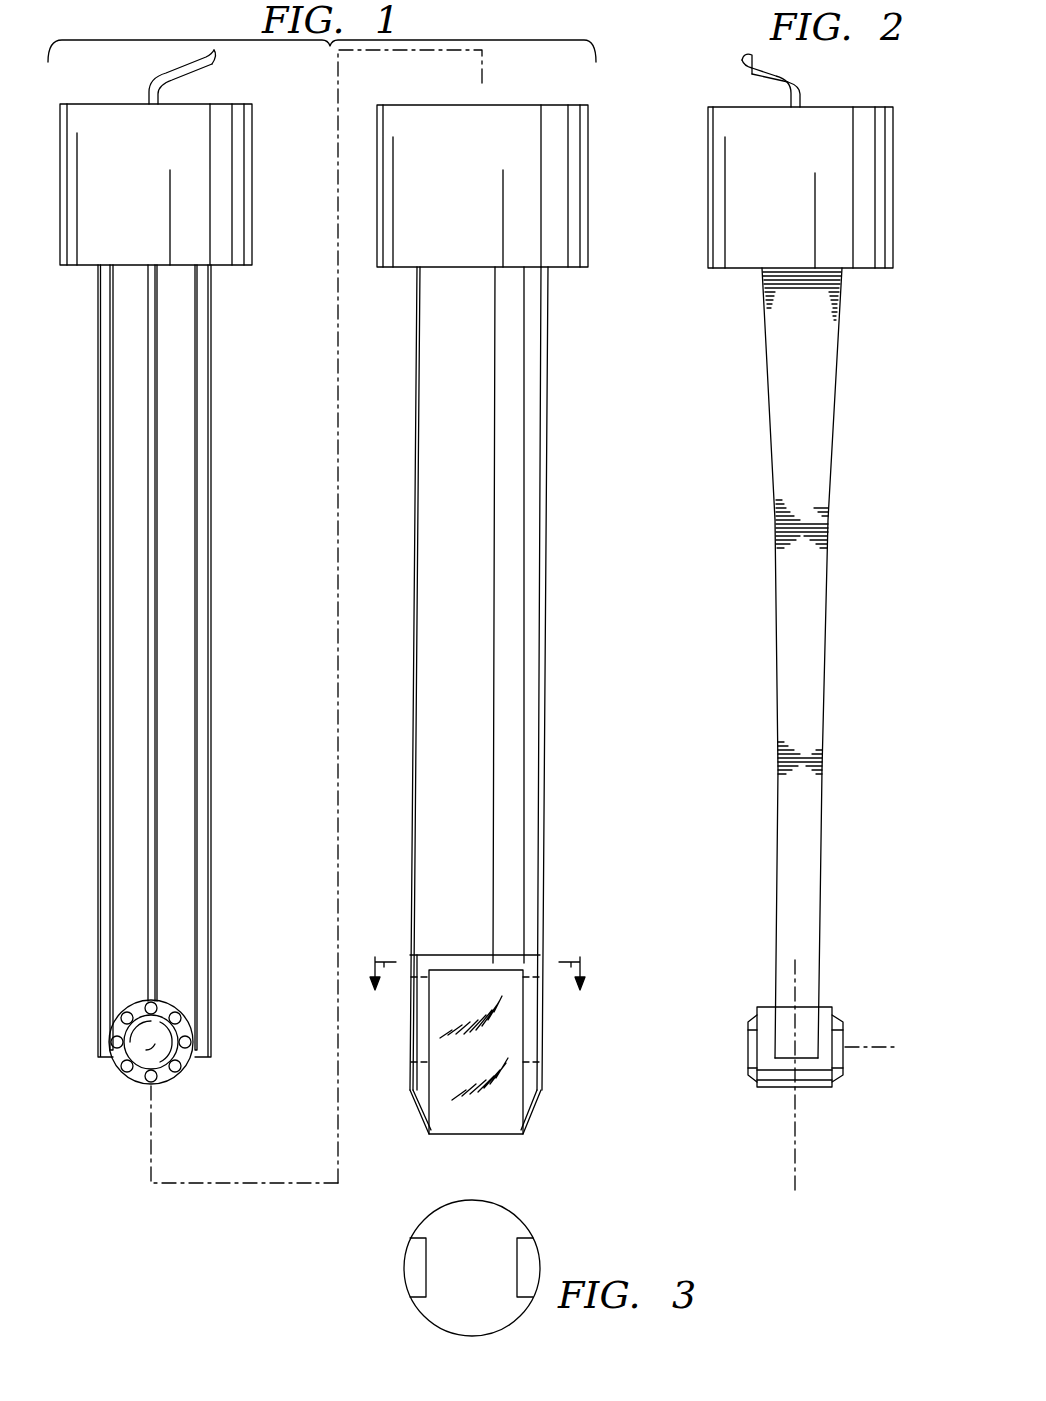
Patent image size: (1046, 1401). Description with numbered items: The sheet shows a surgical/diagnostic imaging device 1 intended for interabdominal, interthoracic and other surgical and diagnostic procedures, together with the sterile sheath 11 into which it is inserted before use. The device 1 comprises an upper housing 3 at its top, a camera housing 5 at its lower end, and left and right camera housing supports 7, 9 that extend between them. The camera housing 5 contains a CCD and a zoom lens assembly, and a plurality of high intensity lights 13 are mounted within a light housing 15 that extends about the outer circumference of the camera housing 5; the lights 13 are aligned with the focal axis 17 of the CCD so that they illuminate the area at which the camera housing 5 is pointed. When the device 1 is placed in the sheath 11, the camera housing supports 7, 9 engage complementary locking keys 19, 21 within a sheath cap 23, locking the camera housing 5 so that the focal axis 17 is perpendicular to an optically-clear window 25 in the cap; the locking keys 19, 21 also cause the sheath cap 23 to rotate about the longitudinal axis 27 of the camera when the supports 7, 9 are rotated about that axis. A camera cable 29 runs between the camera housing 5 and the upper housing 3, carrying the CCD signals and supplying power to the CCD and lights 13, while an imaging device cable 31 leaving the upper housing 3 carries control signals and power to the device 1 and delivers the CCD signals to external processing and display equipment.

In FIG. 1, the surgical/diagnostic imaging device 1 is at (236, 492).
In FIG. 2, the surgical/diagnostic imaging device 1 is at (738, 431).
In FIG. 1, the upper housing 3 is at (253, 158).
In FIG. 2, the upper housing 3 is at (876, 105).
In FIG. 1, the camera housing 5 is at (190, 1033).
In FIG. 2, the camera housing 5 is at (845, 1071).
In FIG. 1, the left camera housing support 7 is at (97, 928).
In FIG. 2, the left camera housing support 7 is at (823, 858).
In FIG. 1, the right camera housing support 9 is at (212, 897).
In FIG. 1, the sterile sheath 11 is at (578, 613).
In FIG. 1, the high intensity lights 13 is at (127, 1073).
In FIG. 1, the light housing 15 is at (160, 1084).
In FIG. 2, the light housing 15 is at (775, 1090).
In FIG. 2, the focal axis 17 is at (866, 1046).
In FIG. 1, the locking key 19 is at (412, 1040).
In FIG. 3, the locking key 19 is at (413, 1278).
In FIG. 1, the locking key 21 is at (540, 1040).
In FIG. 3, the locking key 21 is at (532, 1253).
In FIG. 1, the sheath cap 23 is at (534, 1112).
In FIG. 3, the sheath cap 23 is at (415, 1312).
In FIG. 1, the optically-clear window 25 is at (446, 1140).
In FIG. 1, the longitudinal axis 27 is at (148, 1150).
In FIG. 2, the longitudinal axis 27 is at (797, 1175).
In FIG. 1, the camera cable 29 is at (163, 779).
In FIG. 1, the imaging device cable 31 is at (148, 78).
In FIG. 2, the imaging device cable 31 is at (800, 73).